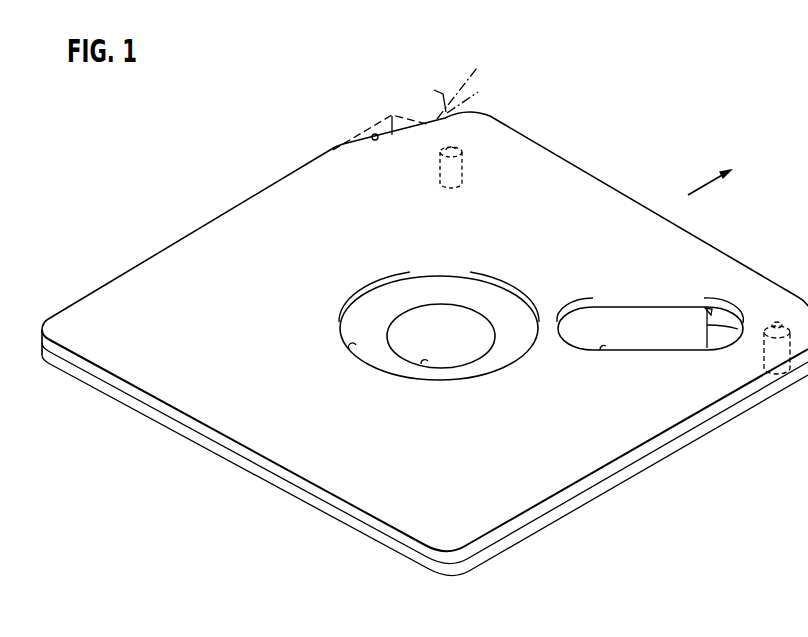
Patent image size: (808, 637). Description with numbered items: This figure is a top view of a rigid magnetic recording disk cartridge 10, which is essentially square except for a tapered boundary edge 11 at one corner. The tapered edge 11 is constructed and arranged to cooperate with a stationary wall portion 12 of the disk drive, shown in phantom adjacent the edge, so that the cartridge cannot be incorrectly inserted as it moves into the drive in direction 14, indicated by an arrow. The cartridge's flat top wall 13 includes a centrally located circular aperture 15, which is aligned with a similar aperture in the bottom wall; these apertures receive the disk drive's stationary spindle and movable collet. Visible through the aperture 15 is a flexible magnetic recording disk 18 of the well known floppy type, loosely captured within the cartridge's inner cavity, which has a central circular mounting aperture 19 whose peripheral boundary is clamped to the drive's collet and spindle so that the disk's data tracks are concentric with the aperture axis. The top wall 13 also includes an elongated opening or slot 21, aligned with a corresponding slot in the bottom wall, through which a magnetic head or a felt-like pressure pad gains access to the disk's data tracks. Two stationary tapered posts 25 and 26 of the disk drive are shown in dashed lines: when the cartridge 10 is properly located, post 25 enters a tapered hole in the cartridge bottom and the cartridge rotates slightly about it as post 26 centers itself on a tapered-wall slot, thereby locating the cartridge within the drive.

The cartridge 10 is at (240, 188).
The tapered boundary edge 11 is at (377, 143).
The stationary wall portion 12 is at (425, 113).
The flat top wall 13 is at (540, 170).
The direction 14 is at (707, 182).
The circular aperture 15 is at (350, 347).
The flexible magnetic recording disk 18 is at (638, 327).
The mounting aperture 19 is at (420, 362).
The slot 21 is at (603, 349).
The stationary tapered post 25 is at (763, 361).
The stationary tapered post 26 is at (468, 168).